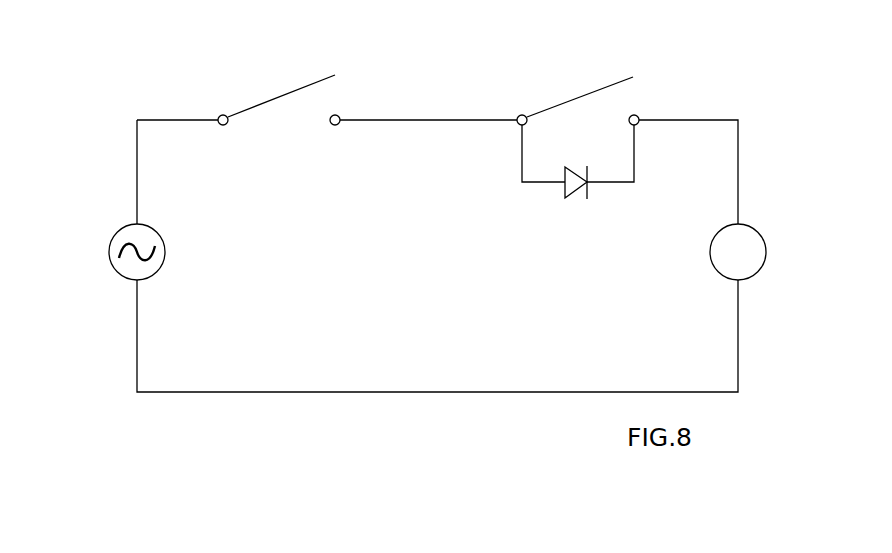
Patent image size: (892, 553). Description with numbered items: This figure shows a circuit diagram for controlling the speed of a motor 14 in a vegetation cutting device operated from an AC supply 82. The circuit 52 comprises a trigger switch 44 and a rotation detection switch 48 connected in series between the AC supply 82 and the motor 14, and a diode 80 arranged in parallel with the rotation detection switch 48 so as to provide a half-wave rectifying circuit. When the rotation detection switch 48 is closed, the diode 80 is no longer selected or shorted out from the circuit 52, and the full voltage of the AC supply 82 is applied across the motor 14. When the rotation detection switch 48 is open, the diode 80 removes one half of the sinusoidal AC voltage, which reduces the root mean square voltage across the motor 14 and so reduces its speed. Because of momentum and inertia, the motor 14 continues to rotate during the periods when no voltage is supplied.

The circuit 52 is at (157, 90).
The trigger switch 44 is at (293, 92).
The rotation detection switch 48 is at (587, 93).
The diode 80 is at (575, 197).
The motor 14 is at (748, 227).
The AC supply 82 is at (130, 227).